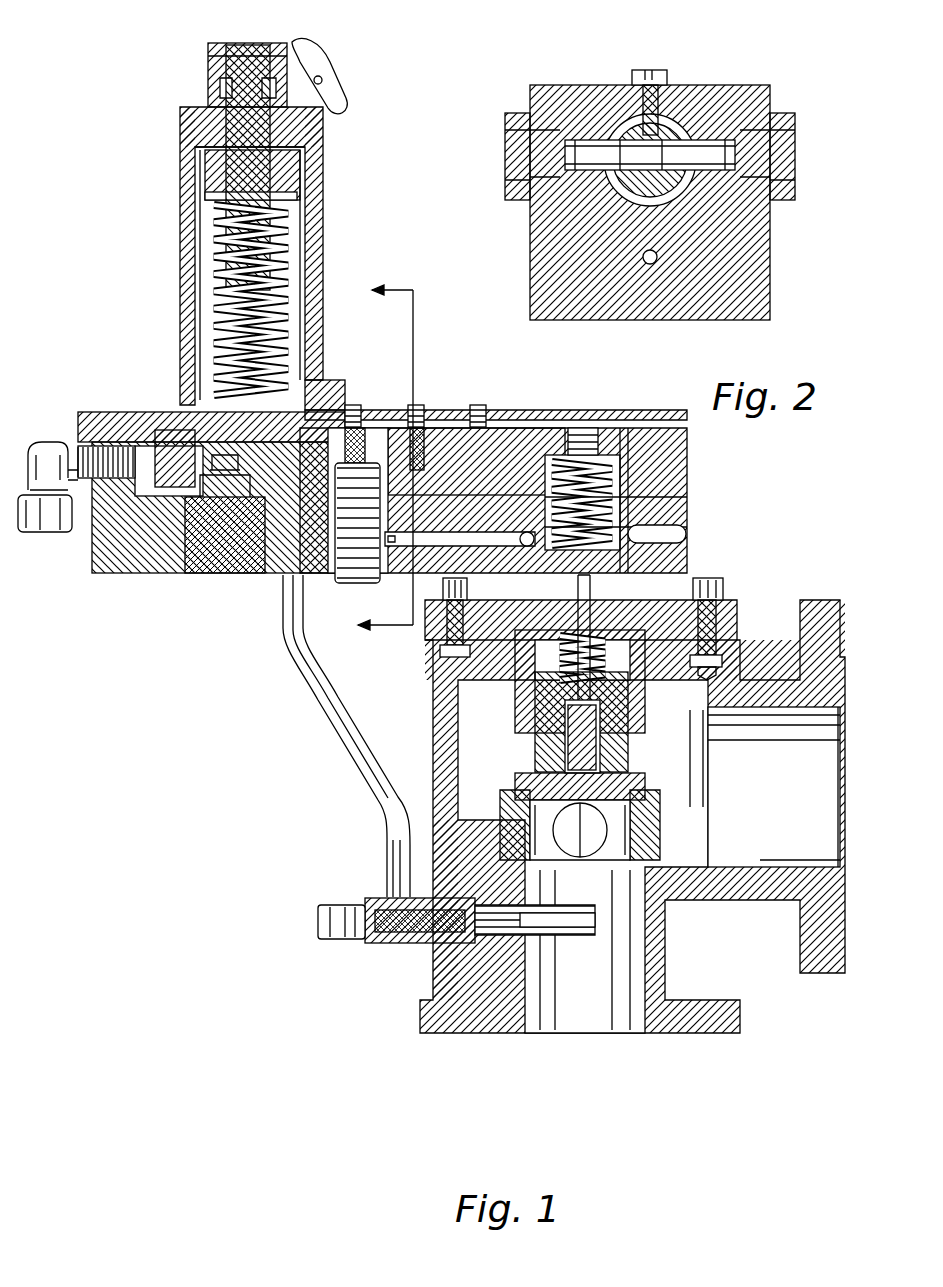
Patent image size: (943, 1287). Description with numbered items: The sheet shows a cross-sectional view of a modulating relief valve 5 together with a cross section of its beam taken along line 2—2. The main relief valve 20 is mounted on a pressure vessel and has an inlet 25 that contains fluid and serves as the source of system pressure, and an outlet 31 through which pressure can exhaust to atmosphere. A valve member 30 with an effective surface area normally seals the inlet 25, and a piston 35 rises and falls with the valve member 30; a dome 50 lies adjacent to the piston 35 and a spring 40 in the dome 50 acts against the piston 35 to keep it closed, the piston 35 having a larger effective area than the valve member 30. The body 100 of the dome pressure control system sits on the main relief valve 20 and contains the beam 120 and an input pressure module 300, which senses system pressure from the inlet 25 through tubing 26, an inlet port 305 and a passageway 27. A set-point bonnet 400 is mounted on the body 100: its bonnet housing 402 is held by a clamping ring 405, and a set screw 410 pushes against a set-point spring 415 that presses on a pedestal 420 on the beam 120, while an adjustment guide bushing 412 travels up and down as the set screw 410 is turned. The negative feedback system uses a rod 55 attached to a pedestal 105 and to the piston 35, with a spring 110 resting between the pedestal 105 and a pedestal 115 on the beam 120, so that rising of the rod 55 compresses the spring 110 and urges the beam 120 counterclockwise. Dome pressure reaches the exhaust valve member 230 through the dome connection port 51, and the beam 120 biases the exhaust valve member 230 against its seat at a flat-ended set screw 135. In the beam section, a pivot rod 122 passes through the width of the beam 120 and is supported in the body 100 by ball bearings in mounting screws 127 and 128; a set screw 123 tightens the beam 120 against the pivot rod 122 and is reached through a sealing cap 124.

In FIG. 1, the modulating relief valve 5 is at (352, 1025).
In FIG. 1, the main relief valve 20 is at (653, 816).
In FIG. 1, the inlet 25 is at (580, 835).
In FIG. 1, the tubing 26 is at (398, 885).
In FIG. 1, the passageway 27 is at (310, 385).
In FIG. 1, the valve member 30 is at (545, 772).
In FIG. 1, the outlet 31 is at (812, 796).
In FIG. 1, the piston 35 is at (585, 755).
In FIG. 1, the spring 40 is at (547, 743).
In FIG. 1, the dome 50 is at (550, 640).
In FIG. 1, the dome connection port 51 is at (402, 575).
In FIG. 1, the rod 55 is at (690, 585).
In FIG. 1, the body 100 is at (530, 463).
In FIG. 1, the pedestal 105 is at (650, 520).
In FIG. 1, the spring 110 is at (640, 485).
In FIG. 1, the pedestal 115 is at (628, 410).
In FIG. 1, the beam 120 is at (545, 430).
In FIG. 2, the beam 120 is at (595, 90).
In FIG. 1, the pivot rod 122 is at (460, 410).
In FIG. 2, the pivot rod 122 is at (700, 150).
In FIG. 2, the set screw 123 is at (688, 140).
In FIG. 1, the sealing cap 124 is at (420, 418).
In FIG. 2, the sealing cap 124 is at (652, 72).
In FIG. 2, the mounting screw 127 is at (785, 120).
In FIG. 2, the mounting screw 128 is at (512, 125).
In FIG. 1, the set screw 135 is at (413, 410).
In FIG. 1, the exhaust valve member 230 is at (282, 582).
In FIG. 1, the input pressure module 300 is at (181, 486).
In FIG. 1, the inlet port 305 is at (240, 575).
In FIG. 1, the set-point bonnet 400 is at (308, 224).
In FIG. 1, the bonnet housing 402 is at (315, 200).
In FIG. 1, the clamping ring 405 is at (180, 412).
In FIG. 1, the set screw 410 is at (320, 150).
In FIG. 1, the adjustment guide bushing 412 is at (255, 168).
In FIG. 1, the set-point spring 415 is at (290, 250).
In FIG. 1, the pedestal 420 is at (185, 408).
In FIG. 1, the section line 2 is at (367, 459).